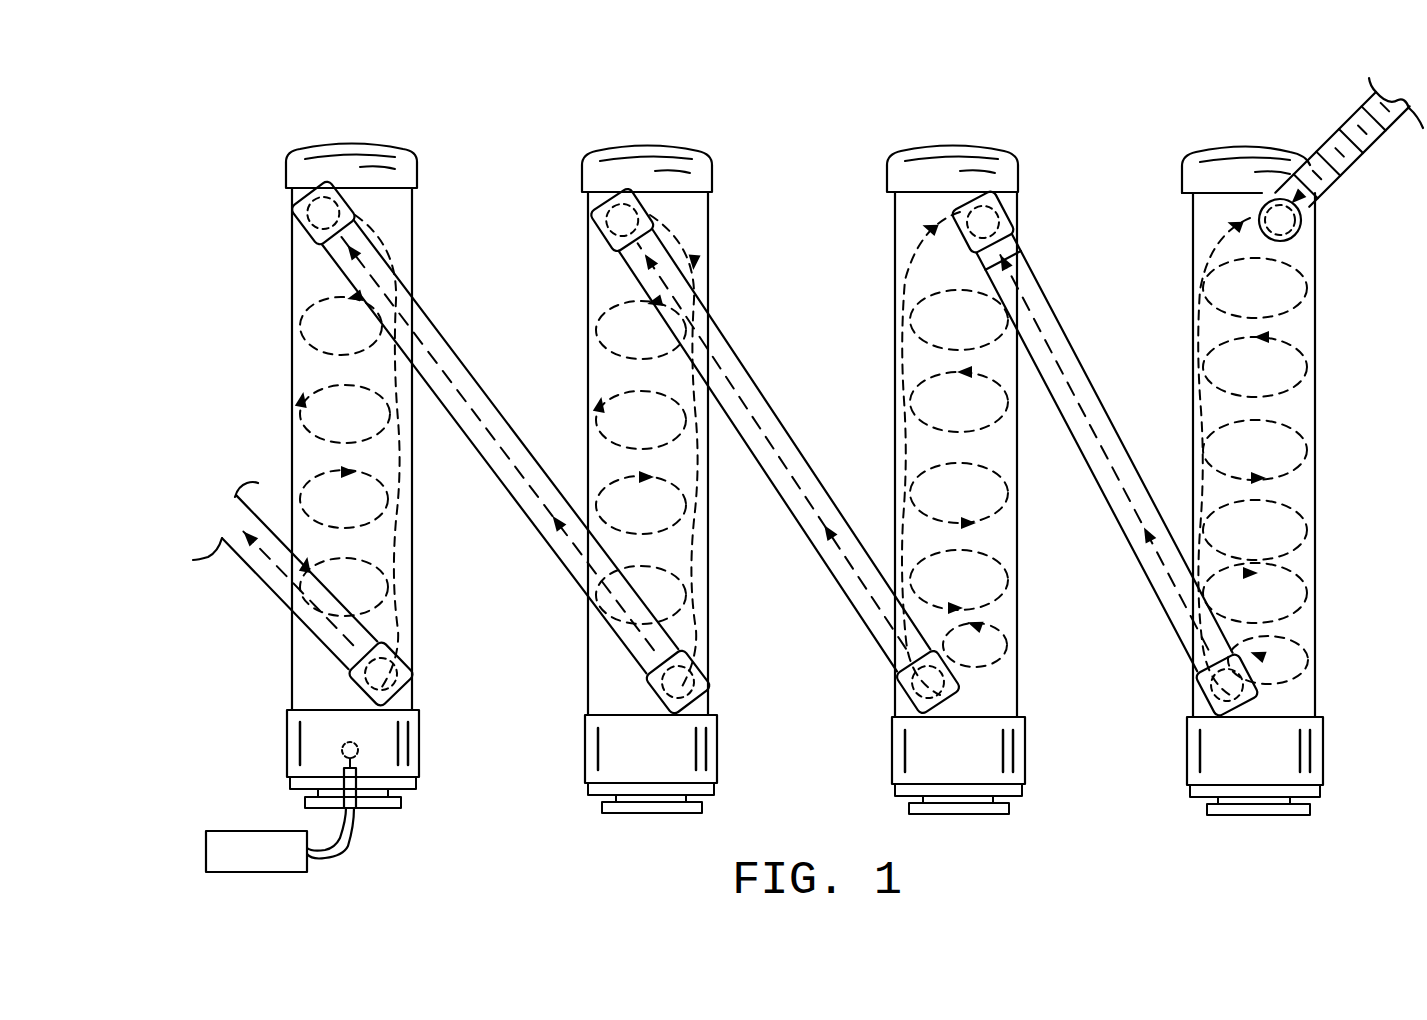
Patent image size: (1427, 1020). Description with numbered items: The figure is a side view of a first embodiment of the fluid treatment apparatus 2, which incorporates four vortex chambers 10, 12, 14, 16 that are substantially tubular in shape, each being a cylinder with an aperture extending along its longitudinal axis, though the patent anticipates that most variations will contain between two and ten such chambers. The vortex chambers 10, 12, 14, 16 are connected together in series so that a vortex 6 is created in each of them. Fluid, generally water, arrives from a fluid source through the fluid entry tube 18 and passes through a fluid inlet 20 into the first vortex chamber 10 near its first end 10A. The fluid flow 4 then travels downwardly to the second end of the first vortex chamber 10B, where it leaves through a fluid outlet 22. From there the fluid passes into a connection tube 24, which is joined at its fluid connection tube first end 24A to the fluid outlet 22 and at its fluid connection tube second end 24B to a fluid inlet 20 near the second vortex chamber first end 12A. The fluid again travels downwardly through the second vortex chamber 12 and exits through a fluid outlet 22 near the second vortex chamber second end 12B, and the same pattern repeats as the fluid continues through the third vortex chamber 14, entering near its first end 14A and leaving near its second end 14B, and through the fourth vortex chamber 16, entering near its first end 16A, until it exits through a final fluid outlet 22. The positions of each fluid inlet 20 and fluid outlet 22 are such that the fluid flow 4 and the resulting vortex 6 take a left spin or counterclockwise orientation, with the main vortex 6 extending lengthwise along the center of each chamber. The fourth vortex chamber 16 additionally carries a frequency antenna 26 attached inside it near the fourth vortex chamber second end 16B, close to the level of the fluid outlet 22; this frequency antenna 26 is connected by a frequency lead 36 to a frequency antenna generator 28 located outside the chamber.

The fluid treatment apparatus 2 is at (268, 150).
The water flow 4 is at (700, 537).
The vortex 6 is at (318, 693).
The first vortex chamber 10 is at (1318, 385).
The first end of the first vortex chamber 10A is at (1250, 150).
The second end of the first vortex chamber 10B is at (1323, 733).
The second vortex chamber 12 is at (1015, 212).
The second vortex chamber first end 12A is at (952, 150).
The second vortex chamber second end 12B is at (1025, 733).
The third vortex chamber 14 is at (708, 245).
The third vortex chamber first end 14A is at (648, 150).
The third vortex chamber second end 14B is at (717, 733).
The fourth vortex chamber 16 is at (412, 240).
The fourth vortex chamber first end 16A is at (348, 148).
The fourth vortex chamber second end 16B is at (420, 733).
The fluid entry tube 18 is at (1340, 132).
The fluid inlet 20 is at (985, 222).
The fluid outlet 22 is at (1245, 685).
The connection tube 24 is at (735, 345).
The fluid connection tube first end 24A is at (1205, 672).
The fluid connection tube second end 24B is at (1042, 290).
The frequency antenna 26 is at (340, 750).
The frequency antenna generator 28 is at (256, 851).
The frequency lead 36 is at (356, 836).